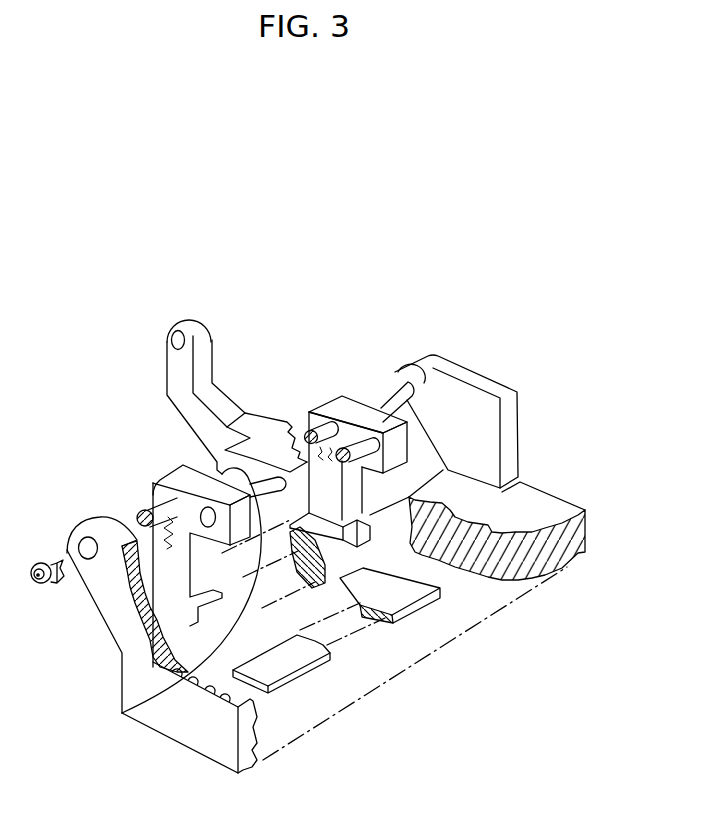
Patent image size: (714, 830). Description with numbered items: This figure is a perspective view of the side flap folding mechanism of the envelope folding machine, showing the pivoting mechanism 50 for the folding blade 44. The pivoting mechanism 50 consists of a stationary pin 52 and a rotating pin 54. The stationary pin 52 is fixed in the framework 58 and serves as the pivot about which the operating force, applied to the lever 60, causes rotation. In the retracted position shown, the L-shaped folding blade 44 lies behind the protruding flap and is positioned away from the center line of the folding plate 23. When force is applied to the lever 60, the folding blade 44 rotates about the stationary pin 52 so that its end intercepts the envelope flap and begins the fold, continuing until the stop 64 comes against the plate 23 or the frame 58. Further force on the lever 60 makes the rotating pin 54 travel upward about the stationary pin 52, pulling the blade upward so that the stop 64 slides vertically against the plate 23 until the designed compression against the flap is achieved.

The folding plate 23 is at (527, 498).
The folding blade 44 is at (270, 662).
The pivoting mechanism 50 is at (397, 352).
The stationary pin 52 is at (395, 378).
The rotating pin 54 is at (122, 716).
The framework 58 is at (488, 386).
The lever 60 is at (200, 323).
The stop 64 is at (380, 530).